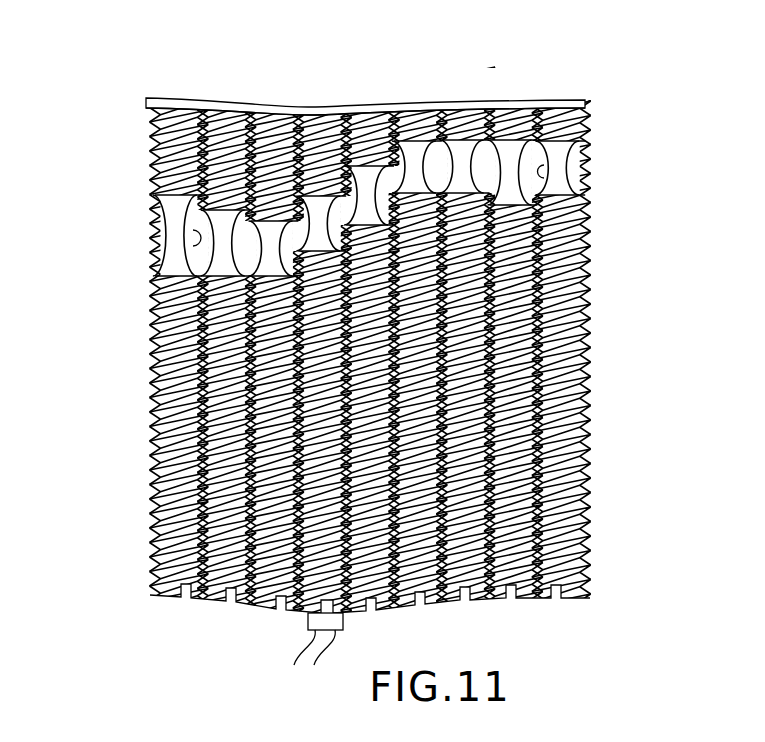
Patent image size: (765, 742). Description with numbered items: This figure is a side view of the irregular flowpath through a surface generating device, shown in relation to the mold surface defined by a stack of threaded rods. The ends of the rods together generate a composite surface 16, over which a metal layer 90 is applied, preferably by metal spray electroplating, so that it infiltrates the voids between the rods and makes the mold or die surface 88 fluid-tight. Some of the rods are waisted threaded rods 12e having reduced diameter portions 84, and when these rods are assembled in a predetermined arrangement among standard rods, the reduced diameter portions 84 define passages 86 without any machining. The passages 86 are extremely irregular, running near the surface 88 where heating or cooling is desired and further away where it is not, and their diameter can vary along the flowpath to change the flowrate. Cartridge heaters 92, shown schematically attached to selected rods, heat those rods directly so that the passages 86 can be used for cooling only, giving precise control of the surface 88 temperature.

The composite surface 16 is at (312, 110).
The mold or die surface 88 is at (290, 99).
The metal layer 90 is at (252, 106).
The reduced diameter portions 84 is at (207, 251).
The passages 86 is at (192, 210).
The waisted threaded rods 12e is at (263, 604).
The cartridge heaters 92 is at (333, 613).